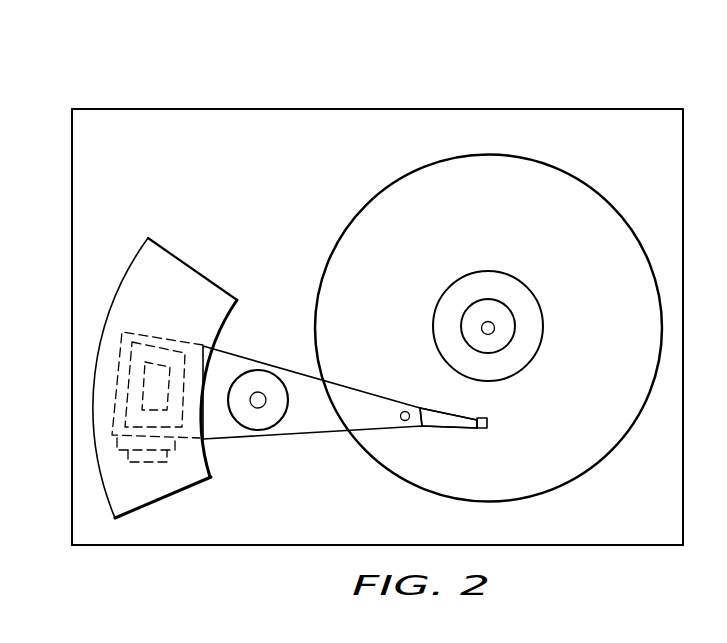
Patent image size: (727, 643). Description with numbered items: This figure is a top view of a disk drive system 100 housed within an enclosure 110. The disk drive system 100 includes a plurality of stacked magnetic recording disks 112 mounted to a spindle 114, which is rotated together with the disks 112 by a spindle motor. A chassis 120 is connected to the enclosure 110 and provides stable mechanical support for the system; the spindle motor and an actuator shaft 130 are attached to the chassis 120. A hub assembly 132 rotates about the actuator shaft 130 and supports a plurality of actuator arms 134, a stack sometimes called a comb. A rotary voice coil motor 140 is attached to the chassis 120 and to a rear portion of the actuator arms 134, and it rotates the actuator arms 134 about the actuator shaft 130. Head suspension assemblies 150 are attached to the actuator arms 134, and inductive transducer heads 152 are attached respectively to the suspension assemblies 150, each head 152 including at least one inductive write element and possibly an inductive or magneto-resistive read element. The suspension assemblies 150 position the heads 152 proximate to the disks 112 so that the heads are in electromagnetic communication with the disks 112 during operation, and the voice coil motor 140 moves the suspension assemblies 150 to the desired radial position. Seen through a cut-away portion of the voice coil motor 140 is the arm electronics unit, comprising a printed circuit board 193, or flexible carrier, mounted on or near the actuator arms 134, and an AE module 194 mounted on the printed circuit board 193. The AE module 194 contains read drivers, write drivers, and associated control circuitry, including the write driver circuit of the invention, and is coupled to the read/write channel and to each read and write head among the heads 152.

The disk drive system 100 is at (478, 74).
The enclosure 110 is at (72, 327).
The magnetic recording disks 112 is at (508, 225).
The spindle 114 is at (518, 327).
The chassis 120 is at (638, 518).
The actuator shaft 130 is at (266, 398).
The hub assembly 132 is at (253, 377).
The actuator arms 134 is at (363, 398).
The rotary voice coil motor 140 is at (181, 279).
The head suspension assemblies 150 is at (455, 423).
The inductive transducer heads 152 is at (490, 423).
The printed circuit board 193 is at (182, 440).
The AE module 194 is at (167, 462).